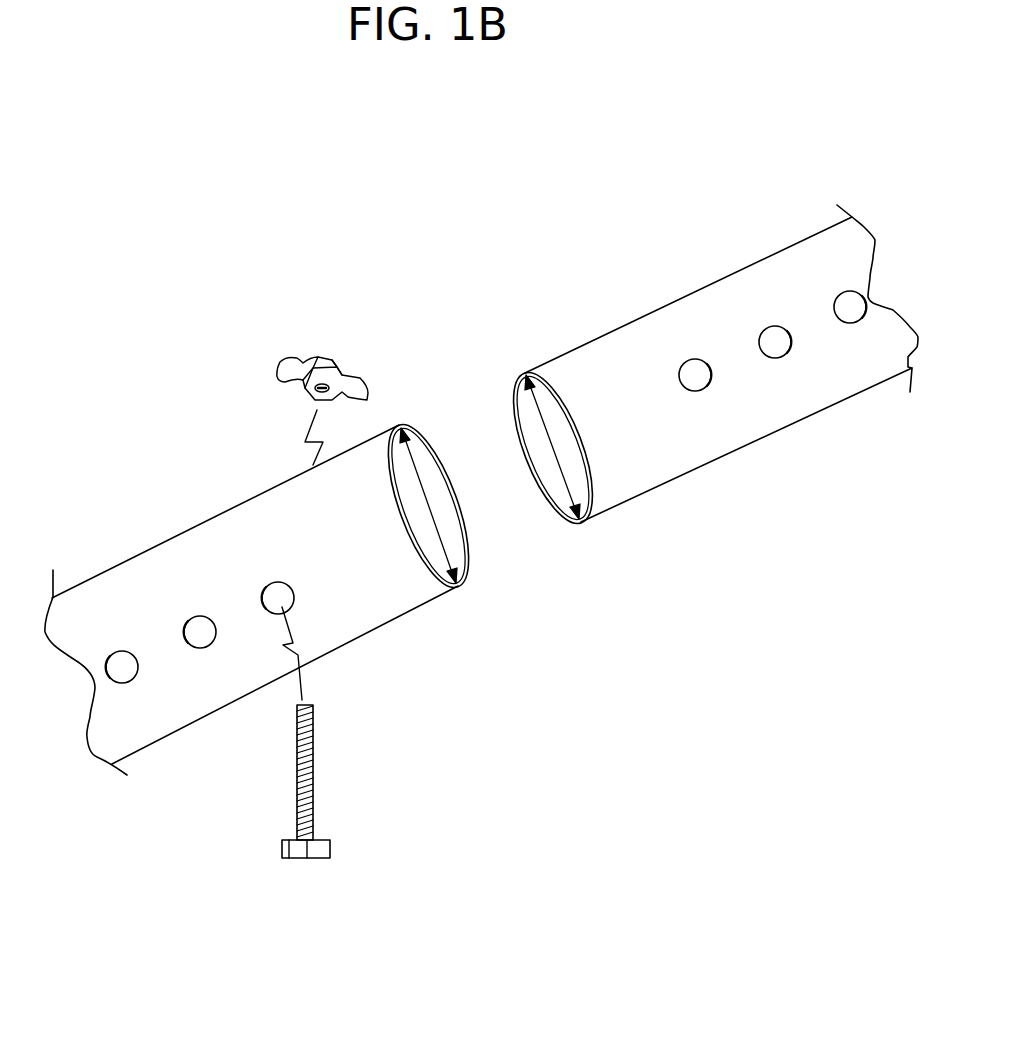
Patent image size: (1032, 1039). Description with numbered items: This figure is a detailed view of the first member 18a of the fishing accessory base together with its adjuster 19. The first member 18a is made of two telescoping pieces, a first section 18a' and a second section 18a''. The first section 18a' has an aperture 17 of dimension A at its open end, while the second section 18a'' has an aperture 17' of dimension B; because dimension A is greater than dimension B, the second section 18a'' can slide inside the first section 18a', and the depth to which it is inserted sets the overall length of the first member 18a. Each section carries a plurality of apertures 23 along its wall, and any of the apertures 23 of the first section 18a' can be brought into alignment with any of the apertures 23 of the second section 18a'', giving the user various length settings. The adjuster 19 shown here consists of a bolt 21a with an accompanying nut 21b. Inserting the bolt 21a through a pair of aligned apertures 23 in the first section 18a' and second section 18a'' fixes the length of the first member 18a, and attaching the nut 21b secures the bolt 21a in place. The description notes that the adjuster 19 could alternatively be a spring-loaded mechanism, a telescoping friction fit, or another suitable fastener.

The first member 18a is at (481, 473).
The first section 18a' is at (251, 592).
The second section 18a'' is at (721, 363).
The aperture 17 is at (448, 505).
The aperture 17' is at (552, 428).
The apertures 23 is at (262, 597).
The adjuster 19 is at (274, 797).
The bolt 21a is at (332, 840).
The nut 21b is at (320, 355).